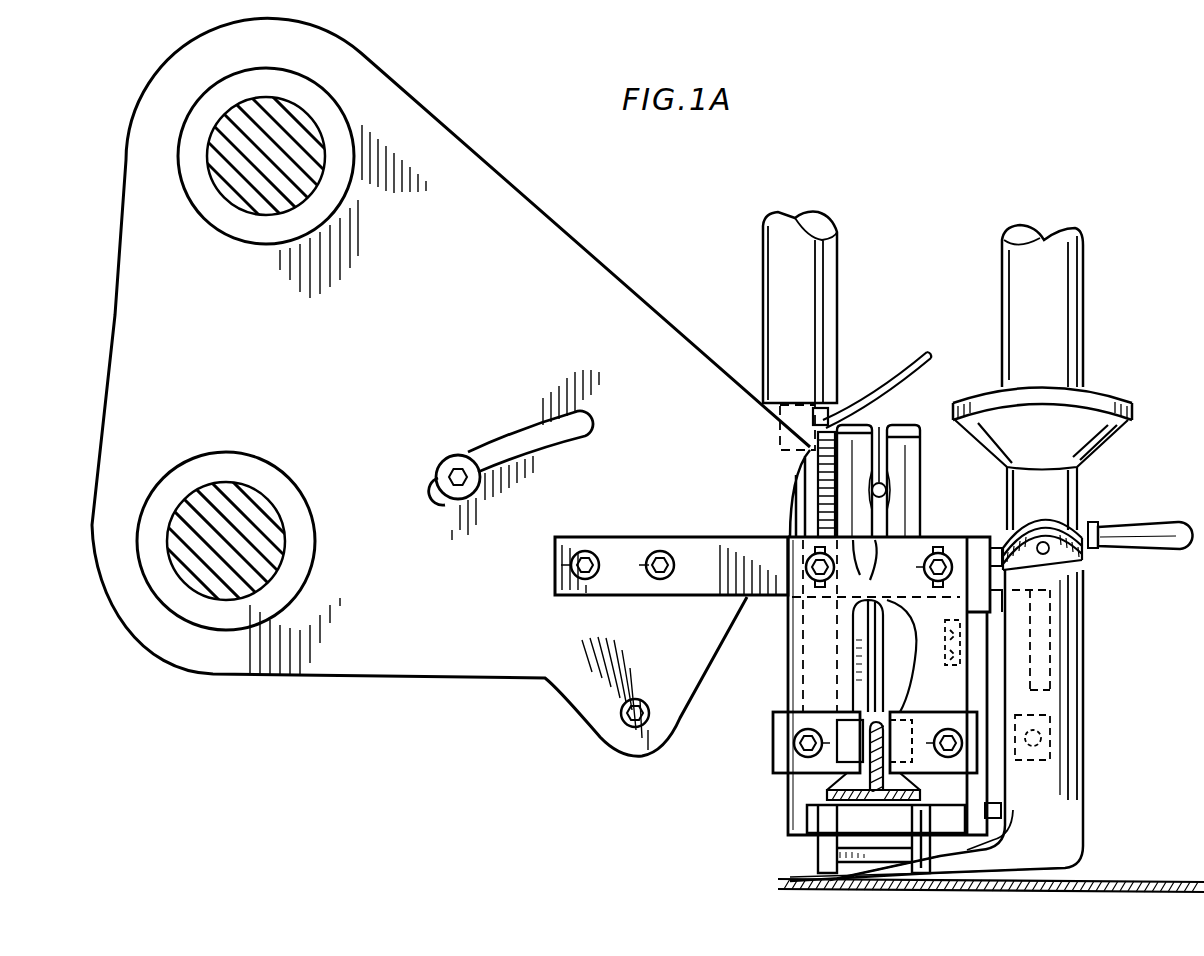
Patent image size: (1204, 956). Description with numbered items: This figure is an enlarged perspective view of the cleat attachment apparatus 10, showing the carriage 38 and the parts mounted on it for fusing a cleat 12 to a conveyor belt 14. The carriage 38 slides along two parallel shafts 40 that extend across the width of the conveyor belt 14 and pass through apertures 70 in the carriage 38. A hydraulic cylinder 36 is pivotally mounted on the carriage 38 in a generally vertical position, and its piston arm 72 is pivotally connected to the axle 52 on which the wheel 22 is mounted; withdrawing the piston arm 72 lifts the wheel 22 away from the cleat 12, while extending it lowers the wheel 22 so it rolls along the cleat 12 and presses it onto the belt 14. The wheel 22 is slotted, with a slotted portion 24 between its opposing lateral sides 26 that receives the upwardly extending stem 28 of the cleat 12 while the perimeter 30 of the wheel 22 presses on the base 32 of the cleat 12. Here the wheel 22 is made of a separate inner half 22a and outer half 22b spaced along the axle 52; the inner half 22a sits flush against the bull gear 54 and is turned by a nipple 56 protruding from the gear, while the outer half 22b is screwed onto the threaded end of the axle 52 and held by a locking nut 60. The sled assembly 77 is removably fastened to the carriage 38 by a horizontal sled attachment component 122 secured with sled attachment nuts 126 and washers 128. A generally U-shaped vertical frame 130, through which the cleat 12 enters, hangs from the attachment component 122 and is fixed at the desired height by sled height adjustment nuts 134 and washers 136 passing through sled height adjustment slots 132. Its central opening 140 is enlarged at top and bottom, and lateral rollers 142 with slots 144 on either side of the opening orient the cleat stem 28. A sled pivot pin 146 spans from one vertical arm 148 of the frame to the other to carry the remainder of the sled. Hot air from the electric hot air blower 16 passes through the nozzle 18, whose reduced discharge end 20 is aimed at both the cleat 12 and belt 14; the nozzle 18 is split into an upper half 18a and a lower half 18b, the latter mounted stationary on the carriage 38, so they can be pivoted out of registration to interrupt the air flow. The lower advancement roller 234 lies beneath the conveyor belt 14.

The cleat attachment apparatus 10 is at (703, 282).
The cleat 12 is at (790, 812).
The conveyor belt 14 is at (1126, 882).
The electric hot air blower 16 is at (1068, 306).
The nozzle 18 is at (1090, 624).
The upper half of nozzle 18a is at (1068, 492).
The lower half of nozzle 18b is at (1070, 712).
The discharge end 20 is at (830, 873).
The wheel 22 is at (926, 447).
The inner half of wheel 22a is at (812, 456).
The outer half of wheel 22b is at (905, 478).
The slotted portion 24 is at (880, 400).
The opposing lateral sides of the wheel 26 is at (869, 626).
The cleat stem 28 is at (780, 722).
The perimeter of the wheel 30 is at (906, 424).
The cleat base 32 is at (1010, 808).
The hydraulic cylinder 36 is at (818, 270).
The carriage 38 is at (135, 306).
The parallel shafts 40 is at (205, 492).
The axle 52 is at (815, 678).
The bull gear 54 is at (819, 410).
The nipple 56 is at (848, 445).
The locking nut 60 is at (923, 659).
The apertures 70 is at (235, 170).
The piston arm 72 is at (790, 500).
The sled assembly 77 is at (787, 787).
The sled attachment component 122 is at (625, 540).
The sled attachment nuts 126 is at (658, 580).
The washers 128 is at (585, 552).
The vertical frame 130 is at (870, 650).
The sled height adjustment slots 132 is at (928, 586).
The sled height adjustment nuts 134 is at (960, 537).
The washers 136 is at (806, 570).
The central opening 140 is at (890, 632).
The lateral rollers 142 is at (790, 758).
The slots 144 is at (845, 742).
The sled pivot pin 146 is at (990, 818).
The vertical arm 148 is at (830, 834).
The lower advancement roller 234 is at (1170, 900).